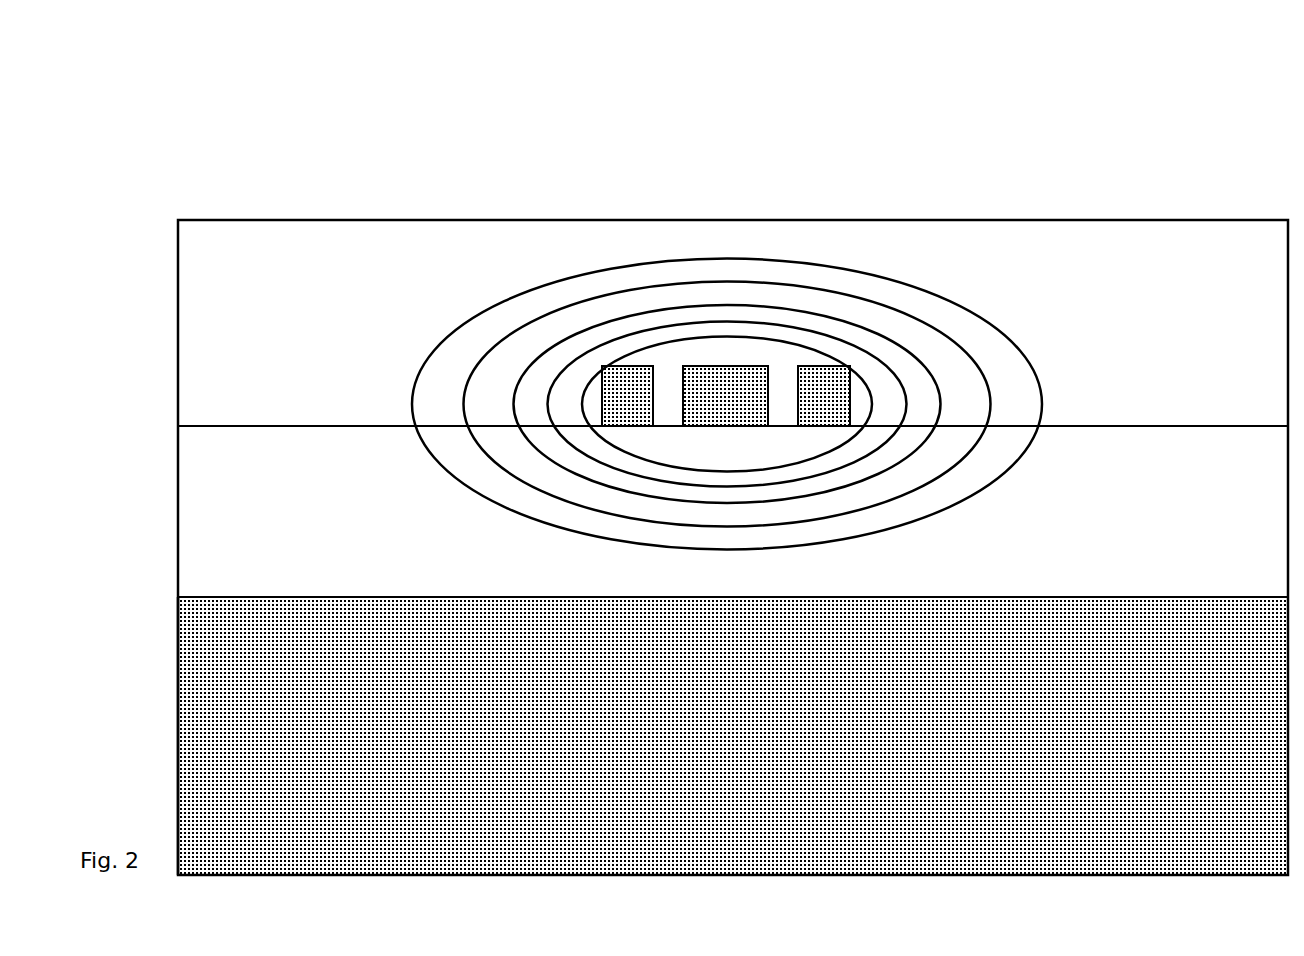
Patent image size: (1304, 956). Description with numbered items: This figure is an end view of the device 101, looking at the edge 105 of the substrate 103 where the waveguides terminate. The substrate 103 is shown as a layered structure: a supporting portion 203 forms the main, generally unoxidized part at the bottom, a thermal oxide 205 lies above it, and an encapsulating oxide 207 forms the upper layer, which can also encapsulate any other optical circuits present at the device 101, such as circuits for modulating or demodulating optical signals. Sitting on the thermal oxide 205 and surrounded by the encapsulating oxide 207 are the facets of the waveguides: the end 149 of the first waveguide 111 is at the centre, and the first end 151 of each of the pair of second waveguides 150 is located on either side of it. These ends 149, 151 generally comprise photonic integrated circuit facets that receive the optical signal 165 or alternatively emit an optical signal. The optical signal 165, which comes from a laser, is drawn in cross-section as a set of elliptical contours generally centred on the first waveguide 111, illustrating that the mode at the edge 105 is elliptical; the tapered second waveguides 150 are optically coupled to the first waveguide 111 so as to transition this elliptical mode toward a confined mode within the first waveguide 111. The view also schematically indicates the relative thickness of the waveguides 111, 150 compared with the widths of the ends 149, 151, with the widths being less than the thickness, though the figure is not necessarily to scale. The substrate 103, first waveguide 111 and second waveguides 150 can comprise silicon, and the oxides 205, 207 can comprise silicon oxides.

The device 101 is at (162, 777).
The substrate 103 is at (178, 649).
The edge 105 is at (578, 397).
The first waveguide 111 is at (747, 366).
The end 149 is at (743, 410).
The second waveguides 150 is at (602, 367).
The first end 151 is at (645, 410).
The optical signal 165 is at (605, 270).
The supporting portion 203 is at (263, 636).
The thermal oxide 205 is at (263, 470).
The encapsulating oxide 207 is at (263, 276).